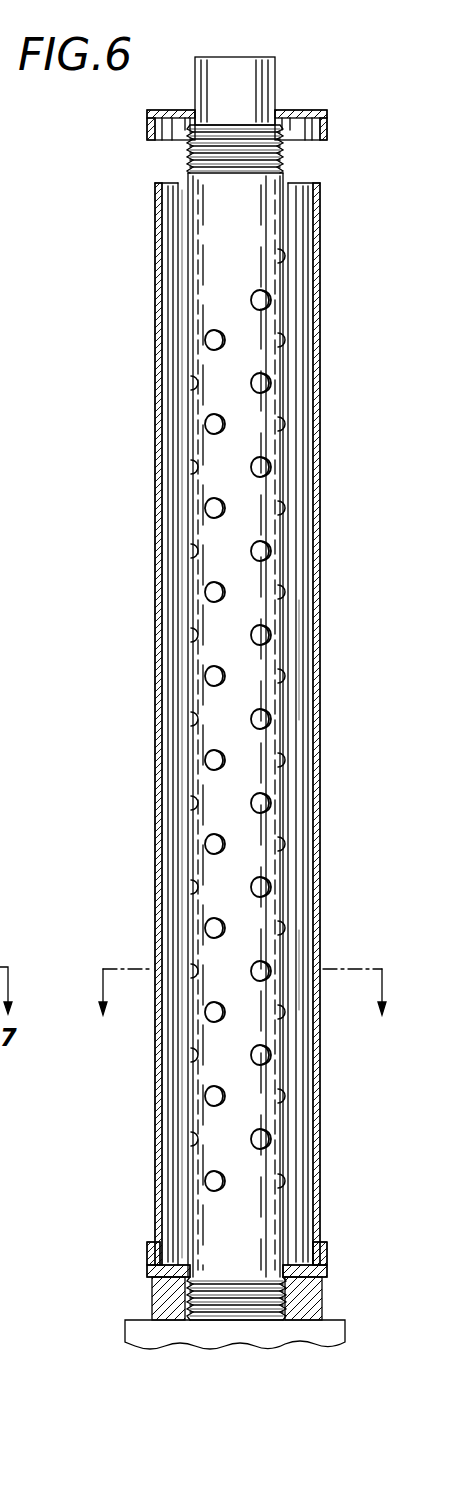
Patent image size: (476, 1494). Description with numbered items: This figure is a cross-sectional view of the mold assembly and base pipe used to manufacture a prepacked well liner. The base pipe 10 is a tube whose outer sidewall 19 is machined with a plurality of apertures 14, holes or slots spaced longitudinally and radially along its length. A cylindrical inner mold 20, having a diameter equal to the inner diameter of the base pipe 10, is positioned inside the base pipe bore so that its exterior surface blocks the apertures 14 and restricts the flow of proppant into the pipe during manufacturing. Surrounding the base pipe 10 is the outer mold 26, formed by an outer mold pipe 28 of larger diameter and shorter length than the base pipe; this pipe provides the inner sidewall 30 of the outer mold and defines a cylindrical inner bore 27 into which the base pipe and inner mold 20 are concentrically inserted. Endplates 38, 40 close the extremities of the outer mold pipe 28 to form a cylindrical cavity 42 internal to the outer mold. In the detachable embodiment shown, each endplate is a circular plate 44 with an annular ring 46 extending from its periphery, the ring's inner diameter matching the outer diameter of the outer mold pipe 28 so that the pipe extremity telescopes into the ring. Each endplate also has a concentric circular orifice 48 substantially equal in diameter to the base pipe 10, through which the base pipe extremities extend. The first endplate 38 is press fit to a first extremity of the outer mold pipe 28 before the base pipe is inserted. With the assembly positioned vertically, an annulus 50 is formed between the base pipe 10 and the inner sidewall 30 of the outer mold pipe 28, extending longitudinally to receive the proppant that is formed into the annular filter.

The base pipe 10 is at (238, 204).
The apertures 14 is at (256, 467).
The outer sidewall 19 is at (238, 267).
The inner mold 20 is at (275, 64).
The outer mold 26 is at (160, 565).
The cylindrical inner bore 27 is at (290, 267).
The outer mold pipe 28 is at (320, 186).
The inner sidewall 30 is at (180, 266).
The first endplate 38 is at (327, 1258).
The endplate 40 is at (327, 128).
The cylindrical cavity 42 is at (293, 904).
The circular plate 44 is at (163, 141).
The annular ring 46 is at (147, 120).
The circular orifice 48 is at (185, 1278).
The annulus 50 is at (293, 666).